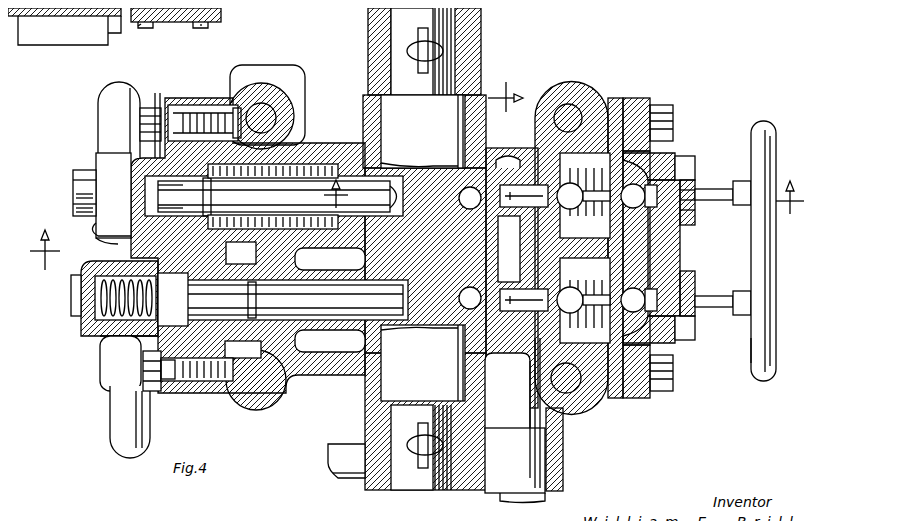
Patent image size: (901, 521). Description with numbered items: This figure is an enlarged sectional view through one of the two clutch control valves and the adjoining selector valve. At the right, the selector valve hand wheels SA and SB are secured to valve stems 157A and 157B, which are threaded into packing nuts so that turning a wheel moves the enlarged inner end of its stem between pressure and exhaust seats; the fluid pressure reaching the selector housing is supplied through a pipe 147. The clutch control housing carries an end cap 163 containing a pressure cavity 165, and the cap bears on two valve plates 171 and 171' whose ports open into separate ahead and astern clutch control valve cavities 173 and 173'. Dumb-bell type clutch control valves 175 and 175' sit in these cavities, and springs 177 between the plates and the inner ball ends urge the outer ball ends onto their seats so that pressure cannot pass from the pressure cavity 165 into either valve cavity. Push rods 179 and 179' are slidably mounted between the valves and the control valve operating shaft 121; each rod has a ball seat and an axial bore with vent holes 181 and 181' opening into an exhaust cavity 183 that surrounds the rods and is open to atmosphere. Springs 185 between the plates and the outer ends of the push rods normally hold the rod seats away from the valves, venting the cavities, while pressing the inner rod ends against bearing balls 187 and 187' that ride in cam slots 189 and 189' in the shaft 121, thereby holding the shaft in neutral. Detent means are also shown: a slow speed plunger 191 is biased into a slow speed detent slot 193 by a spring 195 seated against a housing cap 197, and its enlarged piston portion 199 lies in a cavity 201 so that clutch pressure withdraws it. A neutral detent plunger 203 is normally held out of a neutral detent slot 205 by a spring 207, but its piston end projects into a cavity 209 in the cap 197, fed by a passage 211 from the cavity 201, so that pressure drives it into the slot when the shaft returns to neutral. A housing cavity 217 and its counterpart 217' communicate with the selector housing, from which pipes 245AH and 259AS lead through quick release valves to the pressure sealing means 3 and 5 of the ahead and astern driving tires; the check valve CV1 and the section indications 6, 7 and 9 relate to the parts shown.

The control valve operating shaft 121 is at (372, 28).
The pipe 147 is at (340, 442).
The bearing ball 187 is at (425, 140).
The push rod 179 is at (448, 131).
The cam slot 189 is at (441, 178).
The bearing ball 187' is at (423, 363).
The push rod 179' is at (442, 363).
The cam slot 189' is at (442, 316).
The check valve CV1 is at (190, 97).
The neutral detent plunger 203 is at (298, 125).
The pipe 259AS is at (118, 90).
The cavity 209 is at (102, 195).
The passage 211 is at (128, 235).
The spring 207 is at (274, 196).
The neutral detent slot 205 is at (300, 160).
The section line 6 is at (424, 194).
The section line 7 is at (424, 299).
The slow speed detent slot 193 is at (283, 312).
The plunger 191 is at (340, 282).
The cavity 217 is at (259, 253).
The passage 217' is at (278, 366).
The housing cap 197 is at (80, 312).
The spring 195 is at (100, 330).
The pipe 245AH is at (112, 402).
The piston portion 199 is at (185, 373).
The cavity 201 is at (210, 373).
The exhaust cavity 183 is at (500, 150).
The section line 9 is at (505, 249).
The vent hole 181 is at (507, 249).
The vent hole 181' is at (515, 410).
The spring 177 is at (585, 248).
The spring 185 is at (565, 176).
The ahead clutch control valve cavity 173 is at (595, 105).
The astern clutch control valve cavity 173' is at (585, 391).
The pressure cavity 165 is at (660, 250).
The ahead clutch control valve 175 is at (669, 214).
The astern clutch control valve 175' is at (678, 290).
The end cap 163 is at (668, 172).
The valve plate 171 is at (663, 155).
The valve plate 171' is at (667, 339).
The valve stem 157A is at (695, 194).
The valve stem 157B is at (696, 302).
The selector valve hand wheel SA is at (747, 118).
The selector valve hand wheel SB is at (745, 348).
The pressure sealing means 3 is at (136, 34).
The pressure sealing means 5 is at (417, 153).